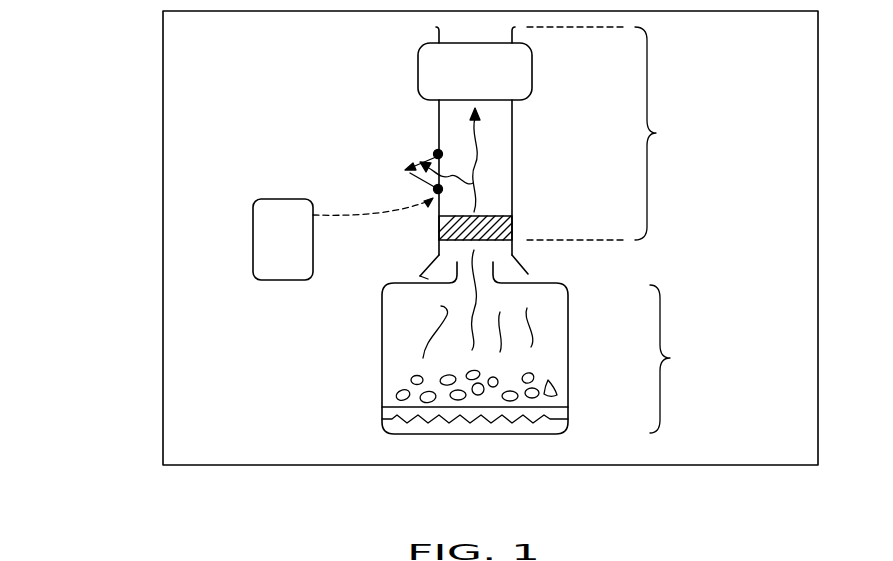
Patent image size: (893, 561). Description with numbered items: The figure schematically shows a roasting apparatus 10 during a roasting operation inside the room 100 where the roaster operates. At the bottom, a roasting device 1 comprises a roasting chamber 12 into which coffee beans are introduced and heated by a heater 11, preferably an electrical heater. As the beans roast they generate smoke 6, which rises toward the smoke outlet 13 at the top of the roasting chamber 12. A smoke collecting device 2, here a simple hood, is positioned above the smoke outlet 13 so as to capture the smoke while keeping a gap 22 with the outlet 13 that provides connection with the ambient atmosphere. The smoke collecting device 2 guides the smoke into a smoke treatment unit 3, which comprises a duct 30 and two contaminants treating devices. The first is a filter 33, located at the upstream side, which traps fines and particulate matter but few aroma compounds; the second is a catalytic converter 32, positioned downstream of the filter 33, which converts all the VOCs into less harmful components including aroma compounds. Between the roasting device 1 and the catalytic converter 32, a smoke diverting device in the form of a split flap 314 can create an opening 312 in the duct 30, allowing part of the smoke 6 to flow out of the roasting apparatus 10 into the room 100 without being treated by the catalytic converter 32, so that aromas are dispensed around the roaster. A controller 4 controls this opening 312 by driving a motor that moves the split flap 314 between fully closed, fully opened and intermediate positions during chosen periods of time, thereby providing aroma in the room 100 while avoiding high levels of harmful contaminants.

The room 100 is at (163, 90).
The roasting device 1 is at (672, 359).
The roasting apparatus 10 is at (718, 267).
The heater 11 is at (569, 422).
The roasting chamber 12 is at (569, 355).
The smoke outlet 13 is at (453, 290).
The smoke 6 is at (423, 360).
The smoke collecting device 2 is at (528, 274).
The gap 22 is at (424, 278).
The smoke treatment unit 3 is at (600, 133).
The duct 30 is at (512, 170).
The catalytic converter 32 is at (532, 72).
The filter 33 is at (500, 228).
The opening 312 is at (432, 152).
The split flap 314 is at (410, 173).
The controller 4 is at (253, 246).